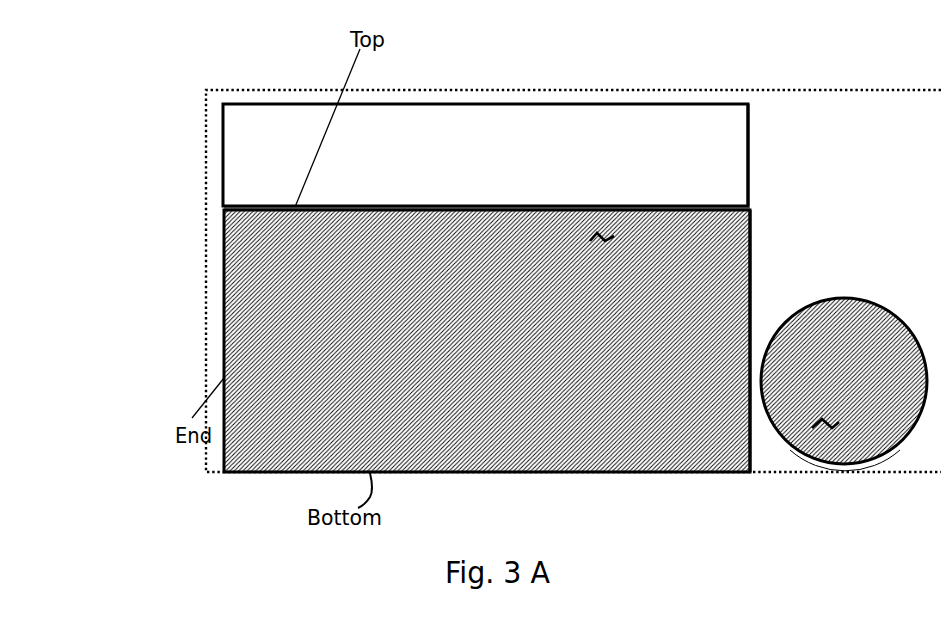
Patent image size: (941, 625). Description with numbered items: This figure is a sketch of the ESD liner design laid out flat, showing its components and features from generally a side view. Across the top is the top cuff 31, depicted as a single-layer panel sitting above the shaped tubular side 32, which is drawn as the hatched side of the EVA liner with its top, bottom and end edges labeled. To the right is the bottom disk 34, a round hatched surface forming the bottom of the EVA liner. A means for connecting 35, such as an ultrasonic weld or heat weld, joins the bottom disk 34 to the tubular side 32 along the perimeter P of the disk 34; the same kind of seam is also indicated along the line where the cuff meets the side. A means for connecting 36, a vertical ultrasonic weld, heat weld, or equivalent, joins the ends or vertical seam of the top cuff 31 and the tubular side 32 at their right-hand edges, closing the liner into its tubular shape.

The top cuff 31 is at (694, 131).
The shaped tubular side 32 is at (577, 472).
The bottom disk 34 is at (800, 452).
The means for connecting bottom disk to tubular side 35 is at (457, 207).
The means for connecting ends or vertical seam 36 is at (741, 155).
The perimeter of the disk P is at (882, 455).